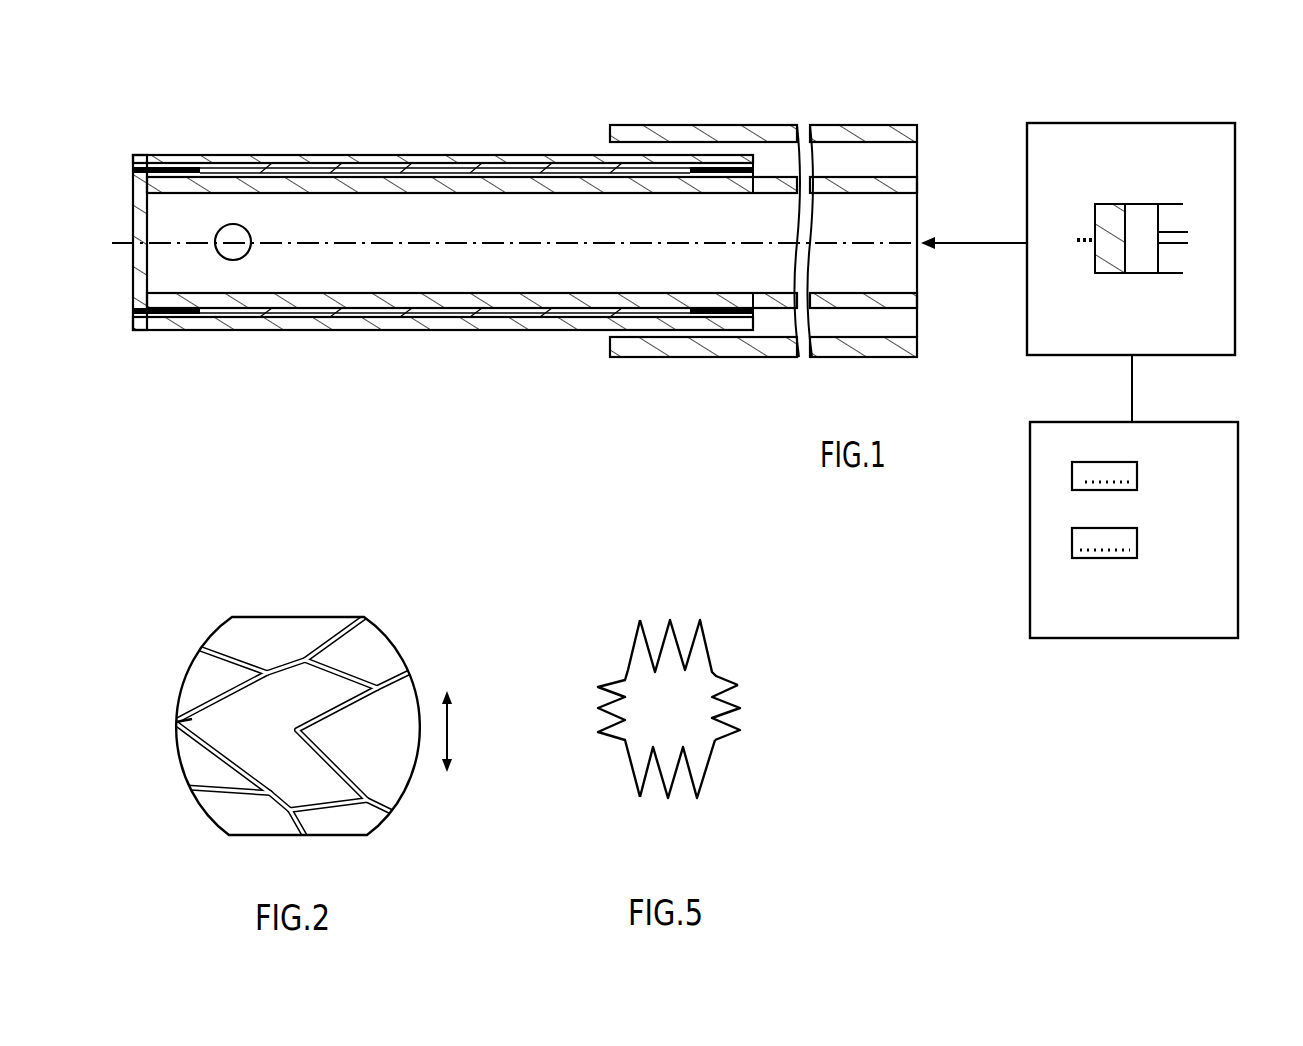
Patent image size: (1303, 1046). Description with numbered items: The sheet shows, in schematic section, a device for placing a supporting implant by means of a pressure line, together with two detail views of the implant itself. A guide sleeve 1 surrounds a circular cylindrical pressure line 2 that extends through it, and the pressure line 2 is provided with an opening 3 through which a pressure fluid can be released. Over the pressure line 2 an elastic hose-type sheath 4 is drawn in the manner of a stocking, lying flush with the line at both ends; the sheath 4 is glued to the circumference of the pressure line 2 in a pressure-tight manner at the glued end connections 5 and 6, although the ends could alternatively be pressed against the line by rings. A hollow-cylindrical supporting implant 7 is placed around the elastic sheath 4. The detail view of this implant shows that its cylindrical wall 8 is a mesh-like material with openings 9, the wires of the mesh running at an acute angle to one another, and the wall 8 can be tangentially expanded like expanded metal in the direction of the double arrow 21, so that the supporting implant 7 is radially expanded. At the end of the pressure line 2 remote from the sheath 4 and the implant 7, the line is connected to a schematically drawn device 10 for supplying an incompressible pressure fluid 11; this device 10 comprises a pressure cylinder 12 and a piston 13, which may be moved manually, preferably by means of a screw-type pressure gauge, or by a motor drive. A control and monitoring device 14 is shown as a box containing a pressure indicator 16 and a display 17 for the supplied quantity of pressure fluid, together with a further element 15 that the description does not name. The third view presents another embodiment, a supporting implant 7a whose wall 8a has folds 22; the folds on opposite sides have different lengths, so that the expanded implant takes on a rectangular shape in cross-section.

In FIG. 1, the guide sleeve 1 is at (658, 138).
In FIG. 1, the pressure line 2 is at (410, 300).
In FIG. 1, the opening 3 is at (238, 250).
In FIG. 1, the elastic hose-type sheath 4 is at (505, 317).
In FIG. 1, the glued end connection 5 is at (737, 320).
In FIG. 1, the glued end connection 6 is at (150, 168).
In FIG. 1, the supporting implant 7 is at (371, 154).
In FIG. 5, the supporting implant 7a is at (725, 661).
In FIG. 2, the cylindrical wall 8 is at (388, 637).
In FIG. 5, the wall 8a is at (718, 740).
In FIG. 2, the openings 9 is at (282, 720).
In FIG. 1, the device for supplying pressure fluid 10 is at (1130, 123).
In FIG. 1, the incompressible pressure fluid 11 is at (1105, 204).
In FIG. 1, the pressure cylinder 12 is at (1177, 203).
In FIG. 1, the piston 13 is at (1143, 257).
In FIG. 1, the control and monitoring device 14 is at (1237, 463).
In FIG. 1, the display 15 is at (1072, 487).
In FIG. 1, the pressure indicator 16 is at (1072, 551).
In FIG. 2, the display 17 is at (185, 733).
In FIG. 2, the double arrow 21 is at (450, 715).
In FIG. 5, the folds 22 is at (744, 706).